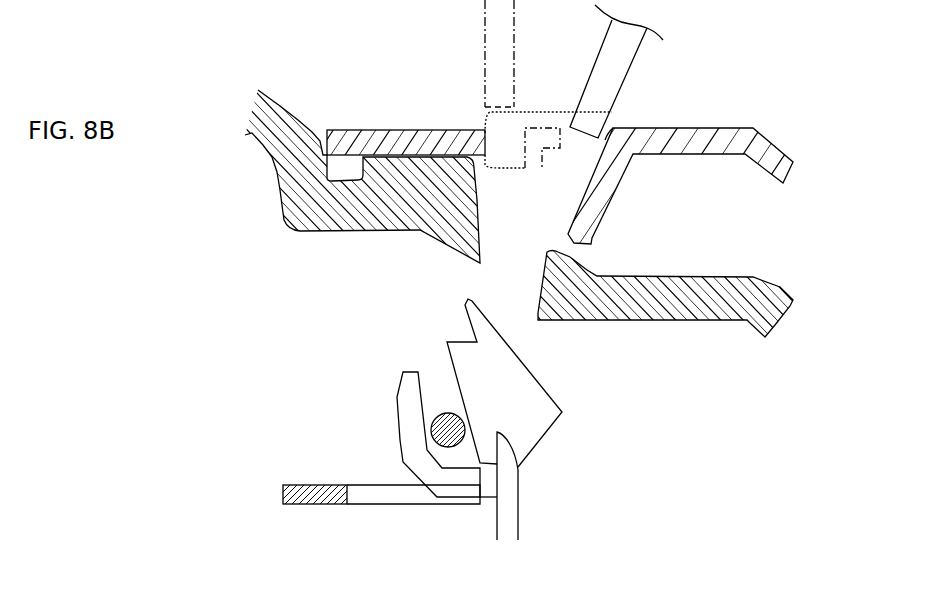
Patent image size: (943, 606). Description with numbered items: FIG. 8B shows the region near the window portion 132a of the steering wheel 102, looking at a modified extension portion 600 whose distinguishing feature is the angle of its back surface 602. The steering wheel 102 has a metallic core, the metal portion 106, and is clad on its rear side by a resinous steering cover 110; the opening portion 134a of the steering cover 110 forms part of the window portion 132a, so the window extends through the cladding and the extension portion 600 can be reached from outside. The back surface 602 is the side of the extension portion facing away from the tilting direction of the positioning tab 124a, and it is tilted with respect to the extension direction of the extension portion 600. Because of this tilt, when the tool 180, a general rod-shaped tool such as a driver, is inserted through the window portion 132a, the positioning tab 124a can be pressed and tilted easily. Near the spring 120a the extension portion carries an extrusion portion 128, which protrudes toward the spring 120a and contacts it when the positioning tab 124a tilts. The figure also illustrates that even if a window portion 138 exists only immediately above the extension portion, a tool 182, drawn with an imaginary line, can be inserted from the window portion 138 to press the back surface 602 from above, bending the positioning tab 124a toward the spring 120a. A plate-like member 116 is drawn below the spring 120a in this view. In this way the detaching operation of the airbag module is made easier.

The tool 182 is at (483, 52).
The tool 180 is at (604, 45).
The window portion 132a is at (549, 112).
The opening portion 134a is at (616, 120).
The steering wheel 102 is at (662, 179).
The steering cover 110 is at (723, 127).
The metal portion 106 is at (755, 277).
The window portion 138 is at (500, 170).
The positioning tab 124a is at (430, 324).
The extrusion portion 128 is at (435, 368).
The spring 120a is at (430, 427).
The bottom plate 116 is at (313, 486).
The extension portion 600 is at (518, 470).
The back surface 602 is at (498, 332).